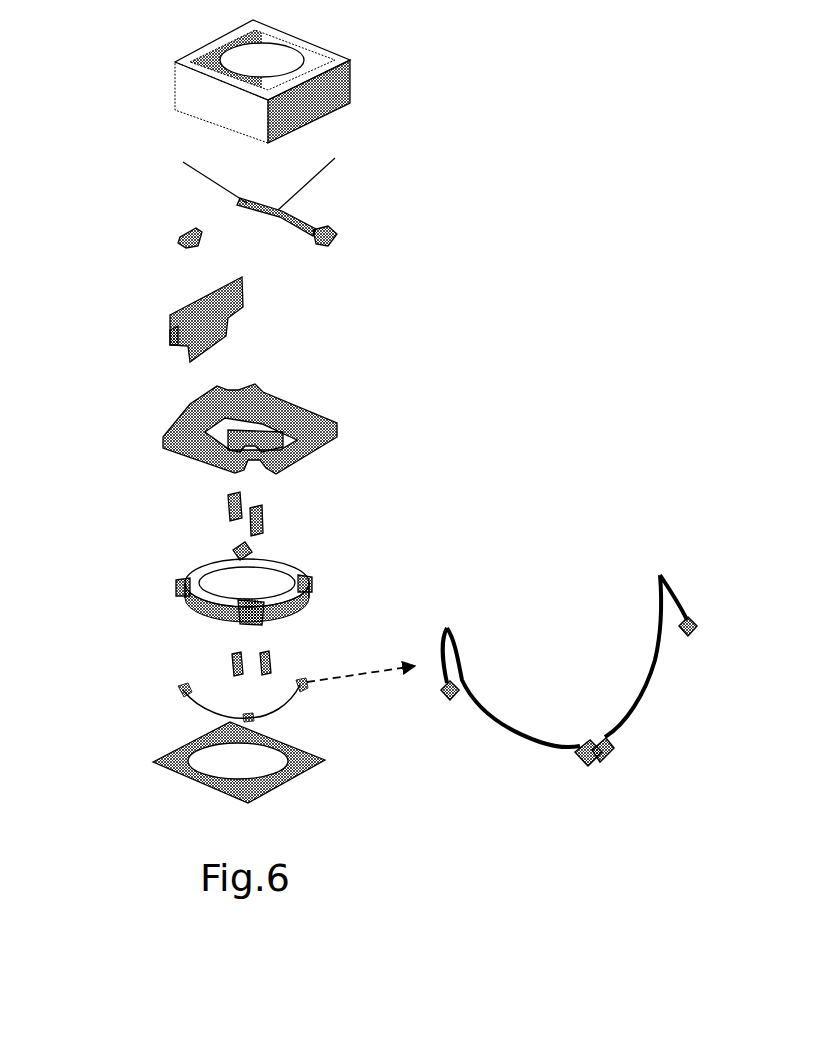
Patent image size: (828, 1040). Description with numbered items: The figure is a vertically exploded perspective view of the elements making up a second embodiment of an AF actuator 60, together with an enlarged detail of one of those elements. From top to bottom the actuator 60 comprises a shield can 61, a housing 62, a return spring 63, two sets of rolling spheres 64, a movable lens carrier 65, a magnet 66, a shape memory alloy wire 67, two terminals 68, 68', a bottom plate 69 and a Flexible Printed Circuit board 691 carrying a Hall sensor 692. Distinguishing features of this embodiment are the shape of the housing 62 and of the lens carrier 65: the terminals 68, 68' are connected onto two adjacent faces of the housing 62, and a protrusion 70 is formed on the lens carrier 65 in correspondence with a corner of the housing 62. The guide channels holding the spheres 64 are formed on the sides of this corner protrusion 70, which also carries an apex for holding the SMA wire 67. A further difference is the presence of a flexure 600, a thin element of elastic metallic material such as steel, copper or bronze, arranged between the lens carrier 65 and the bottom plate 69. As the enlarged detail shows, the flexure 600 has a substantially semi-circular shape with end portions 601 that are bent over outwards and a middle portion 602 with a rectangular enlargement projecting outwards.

The AF actuator 60 is at (84, 160).
The shield can 61 is at (350, 85).
The housing 62 is at (338, 430).
The return spring 63 is at (265, 528).
The rolling spheres 64 is at (232, 663).
The movable lens carrier 65 is at (188, 597).
The magnet 66 is at (226, 515).
The shape memory alloy wire 67 is at (340, 166).
The terminal 68 is at (120, 255).
The terminal 68' is at (378, 206).
The bottom plate 69 is at (168, 773).
The protrusion 70 is at (312, 606).
The flexure 600 is at (180, 690).
The end portions 601 is at (446, 703).
The middle portion 602 is at (598, 770).
The Flexible Printed Circuit board 691 is at (172, 345).
The Hall sensor 692 is at (244, 292).